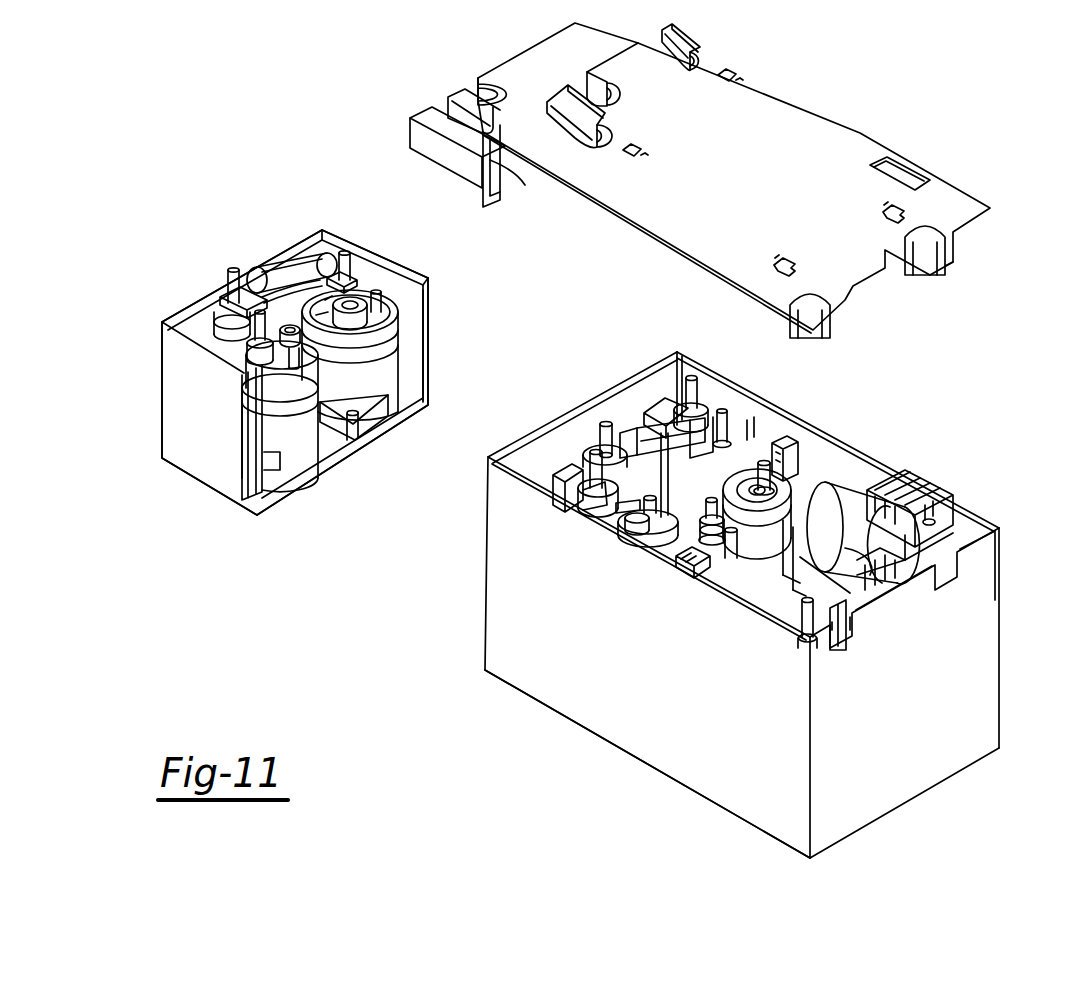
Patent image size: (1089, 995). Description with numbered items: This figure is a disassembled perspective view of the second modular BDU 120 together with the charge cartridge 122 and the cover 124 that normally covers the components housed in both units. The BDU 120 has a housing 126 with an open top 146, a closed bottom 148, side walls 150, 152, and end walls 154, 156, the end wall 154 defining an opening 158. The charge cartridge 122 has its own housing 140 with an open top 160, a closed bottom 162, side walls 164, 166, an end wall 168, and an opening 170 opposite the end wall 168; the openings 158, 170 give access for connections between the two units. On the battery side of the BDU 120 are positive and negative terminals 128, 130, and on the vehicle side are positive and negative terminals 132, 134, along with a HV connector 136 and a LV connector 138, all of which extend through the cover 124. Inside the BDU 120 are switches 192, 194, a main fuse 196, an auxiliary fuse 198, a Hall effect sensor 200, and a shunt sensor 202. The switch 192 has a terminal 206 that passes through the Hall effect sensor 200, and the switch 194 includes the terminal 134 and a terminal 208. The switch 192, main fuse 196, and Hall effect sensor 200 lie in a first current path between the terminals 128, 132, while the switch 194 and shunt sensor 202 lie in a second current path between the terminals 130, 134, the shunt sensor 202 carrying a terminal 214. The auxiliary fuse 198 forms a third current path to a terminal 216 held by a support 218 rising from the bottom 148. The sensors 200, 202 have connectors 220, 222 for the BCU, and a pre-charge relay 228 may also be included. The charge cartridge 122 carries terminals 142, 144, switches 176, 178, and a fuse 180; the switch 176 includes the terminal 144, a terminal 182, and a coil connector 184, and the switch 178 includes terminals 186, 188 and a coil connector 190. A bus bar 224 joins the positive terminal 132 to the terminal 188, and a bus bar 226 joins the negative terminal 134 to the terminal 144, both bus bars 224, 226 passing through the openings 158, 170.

The modular BDU 120 is at (938, 372).
The charge cartridge 122 is at (453, 266).
The cover 124 is at (852, 158).
The housing 126 is at (990, 670).
The positive terminal 128 is at (927, 518).
The negative terminal 130 is at (802, 610).
The positive terminal 132 is at (692, 375).
The negative terminal 134 is at (593, 450).
The HV connector 136 is at (913, 480).
The LV connector 138 is at (900, 573).
The housing 140 is at (175, 380).
The terminal 142 is at (233, 268).
The terminal 144 is at (247, 352).
The open top 146 is at (822, 445).
The closed bottom 148 is at (527, 693).
The side wall 150 is at (660, 752).
The side wall 152 is at (868, 457).
The end wall 154 is at (485, 578).
The end wall 156 is at (958, 728).
The opening 158 is at (637, 370).
The open top 160 is at (403, 288).
The closed bottom 162 is at (347, 440).
The side wall 164 is at (190, 448).
The side wall 166 is at (372, 254).
The end wall 168 is at (173, 317).
The opening 170 is at (407, 357).
The switch 176 is at (297, 452).
The switch 178 is at (391, 384).
The fuse 180 is at (270, 268).
The terminal 182 is at (320, 360).
The coil connector 184 is at (230, 341).
The terminal 186 is at (345, 252).
The terminal 188 is at (367, 322).
The coil connector 190 is at (285, 270).
The switch 192 is at (705, 489).
The switch 194 is at (637, 507).
The main fuse 196 is at (871, 540).
The auxiliary fuse 198 is at (640, 428).
The Hall effect sensor 200 is at (750, 433).
The shunt sensor 202 is at (680, 537).
The terminal 206 is at (763, 461).
The terminal 208 is at (628, 527).
The terminal 214 is at (721, 408).
The terminal 216 is at (603, 422).
The support 218 is at (620, 504).
The connector 220 is at (778, 442).
The connector 222 is at (677, 558).
The bus bar 224 is at (670, 400).
The bus bar 226 is at (570, 473).
The pre-charge relay 228 is at (835, 607).